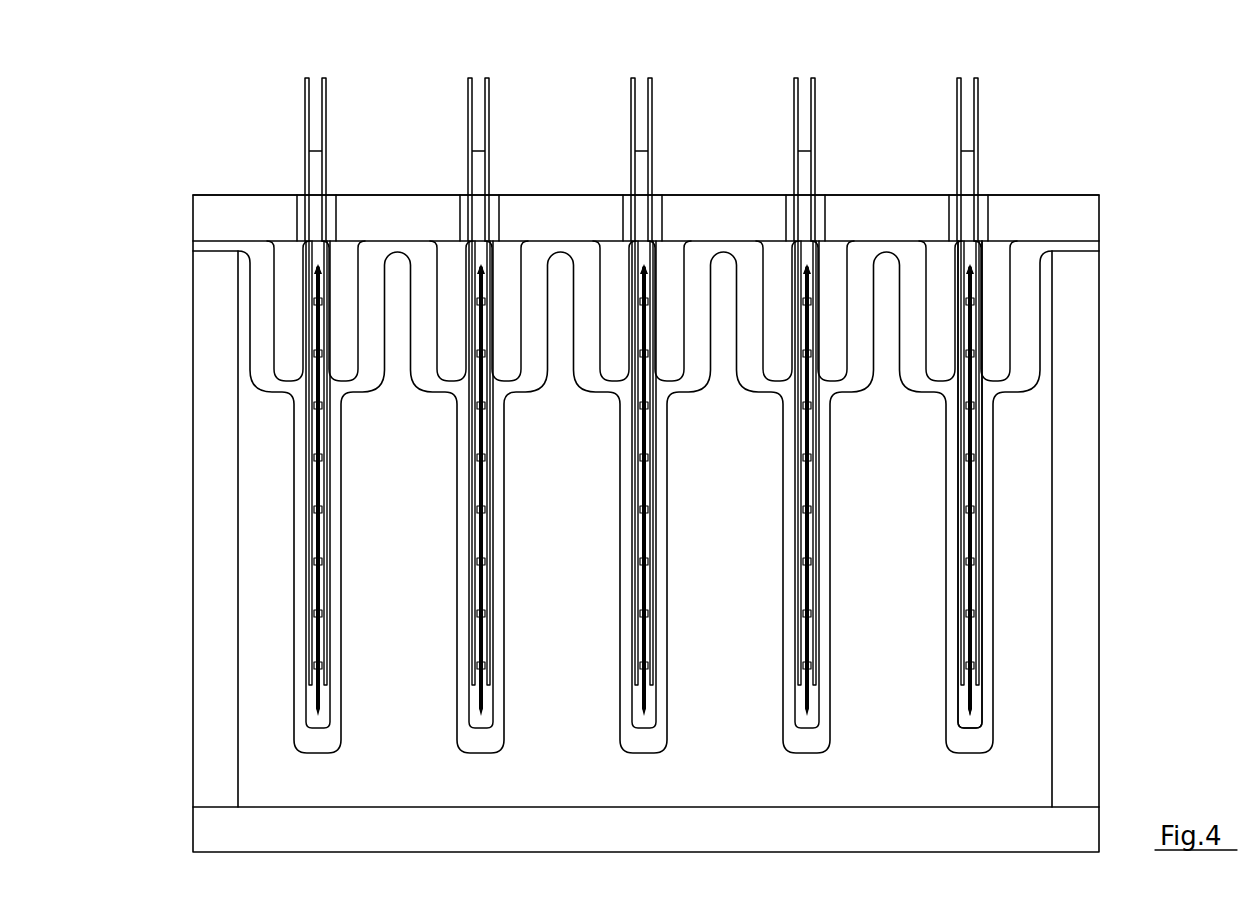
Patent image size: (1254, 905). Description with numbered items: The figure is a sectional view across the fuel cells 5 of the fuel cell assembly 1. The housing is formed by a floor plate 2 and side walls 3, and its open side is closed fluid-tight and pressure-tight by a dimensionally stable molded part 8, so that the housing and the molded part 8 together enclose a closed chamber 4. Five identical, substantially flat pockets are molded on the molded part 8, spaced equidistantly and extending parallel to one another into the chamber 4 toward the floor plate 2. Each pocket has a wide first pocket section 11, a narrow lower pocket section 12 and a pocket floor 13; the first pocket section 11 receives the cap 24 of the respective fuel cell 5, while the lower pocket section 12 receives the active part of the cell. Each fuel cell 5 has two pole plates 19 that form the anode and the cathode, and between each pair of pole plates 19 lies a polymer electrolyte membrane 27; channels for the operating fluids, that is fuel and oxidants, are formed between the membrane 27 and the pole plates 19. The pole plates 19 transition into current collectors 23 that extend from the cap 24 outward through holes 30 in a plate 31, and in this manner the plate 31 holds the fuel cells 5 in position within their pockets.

The fuel cell assembly 1 is at (1205, 83).
The floor plate 2 is at (207, 825).
The side walls 3 is at (213, 677).
The chamber 4 is at (268, 765).
The fuel cell 5 is at (993, 492).
The molded part 8 is at (1067, 250).
The first pocket section 11 is at (1030, 326).
The lower pocket section 12 is at (987, 584).
The pocket floor 13 is at (978, 740).
The pole plates 19 is at (958, 180).
The current collectors 23 is at (957, 97).
The cap 24 is at (995, 322).
The polymer electrolyte membrane 27 is at (977, 702).
The holes 30 is at (957, 212).
The plate 31 is at (1027, 210).